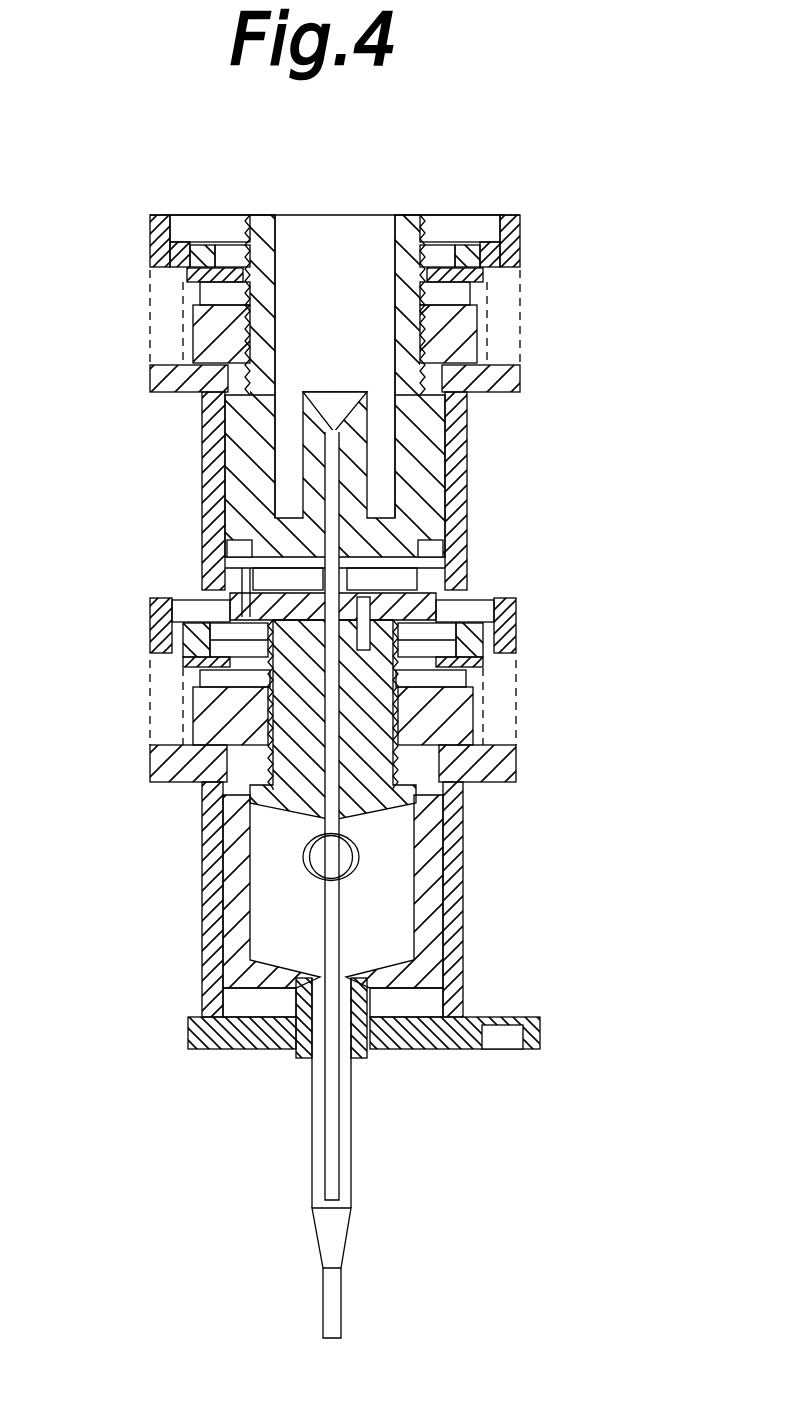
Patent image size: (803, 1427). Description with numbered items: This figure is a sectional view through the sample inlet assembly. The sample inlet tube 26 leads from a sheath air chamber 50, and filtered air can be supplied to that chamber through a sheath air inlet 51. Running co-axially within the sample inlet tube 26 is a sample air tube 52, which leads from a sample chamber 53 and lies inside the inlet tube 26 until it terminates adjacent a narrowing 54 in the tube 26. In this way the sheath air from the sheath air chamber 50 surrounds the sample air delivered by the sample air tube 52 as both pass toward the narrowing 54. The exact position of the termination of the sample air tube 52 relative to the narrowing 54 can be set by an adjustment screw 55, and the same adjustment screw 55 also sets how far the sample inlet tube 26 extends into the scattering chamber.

The sample inlet tube 26 is at (360, 1217).
The sheath air chamber 50 is at (368, 853).
The sheath air inlet 51 is at (302, 862).
The sample air tube 52 is at (347, 1120).
The sample chamber 53 is at (325, 348).
The narrowing 54 is at (313, 1225).
The adjustment screw 55 is at (430, 722).